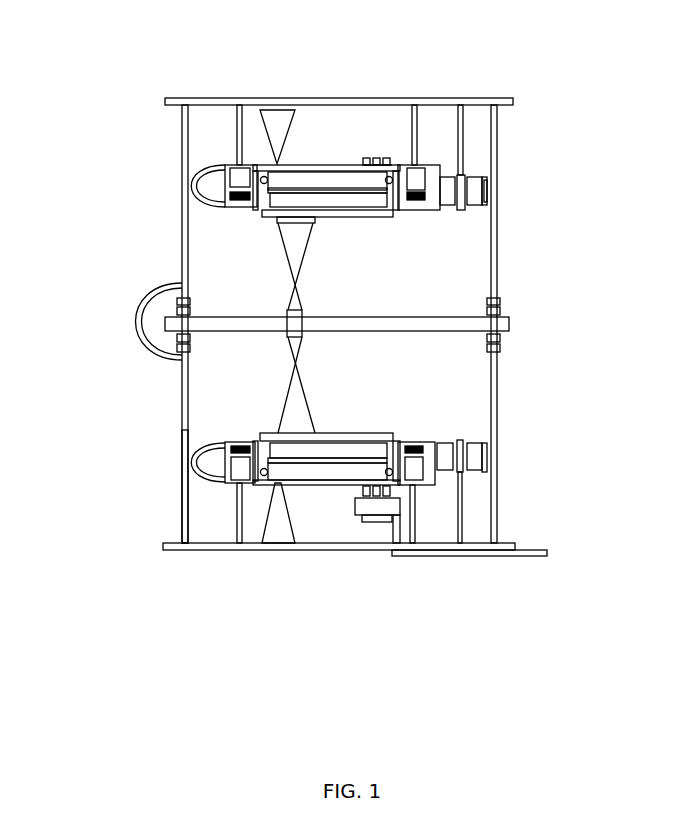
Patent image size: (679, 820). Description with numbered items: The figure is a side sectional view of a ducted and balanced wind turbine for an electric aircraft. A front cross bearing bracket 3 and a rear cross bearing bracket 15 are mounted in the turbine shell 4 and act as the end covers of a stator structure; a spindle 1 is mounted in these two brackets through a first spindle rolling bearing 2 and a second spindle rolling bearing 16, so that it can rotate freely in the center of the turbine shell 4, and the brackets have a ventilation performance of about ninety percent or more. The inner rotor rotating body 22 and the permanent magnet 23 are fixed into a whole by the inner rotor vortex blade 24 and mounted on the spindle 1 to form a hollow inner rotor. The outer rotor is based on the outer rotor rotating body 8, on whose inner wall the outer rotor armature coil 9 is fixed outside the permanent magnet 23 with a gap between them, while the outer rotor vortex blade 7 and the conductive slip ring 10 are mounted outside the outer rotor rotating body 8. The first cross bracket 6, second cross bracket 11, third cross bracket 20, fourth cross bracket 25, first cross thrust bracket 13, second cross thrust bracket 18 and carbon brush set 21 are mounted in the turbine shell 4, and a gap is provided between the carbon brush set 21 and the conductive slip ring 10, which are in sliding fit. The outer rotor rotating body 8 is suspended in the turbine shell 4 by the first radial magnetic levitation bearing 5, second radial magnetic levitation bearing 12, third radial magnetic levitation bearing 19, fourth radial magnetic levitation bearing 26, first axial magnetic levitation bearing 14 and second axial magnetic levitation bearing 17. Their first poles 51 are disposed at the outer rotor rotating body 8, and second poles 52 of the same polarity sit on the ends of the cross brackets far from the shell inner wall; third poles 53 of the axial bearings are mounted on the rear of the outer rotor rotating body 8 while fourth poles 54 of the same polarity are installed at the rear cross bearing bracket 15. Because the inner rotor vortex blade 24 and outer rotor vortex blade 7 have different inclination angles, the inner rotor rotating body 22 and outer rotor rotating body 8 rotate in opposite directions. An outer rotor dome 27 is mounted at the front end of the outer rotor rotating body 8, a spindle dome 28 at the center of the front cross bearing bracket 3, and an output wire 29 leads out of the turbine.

The spindle 1 is at (168, 292).
The first spindle rolling bearing 2 is at (177, 300).
The front cross bearing bracket 3 is at (183, 283).
The turbine shell 4 is at (183, 99).
The first radial magnetic levitation bearing 5 is at (229, 164).
The first cross bracket 6 is at (246, 164).
The outer rotor vortex blade 7 is at (278, 123).
The outer rotor rotating body 8 is at (306, 165).
The outer rotor armature coil 9 is at (332, 186).
The conductive slip ring 10 is at (388, 160).
The second cross bracket 11 is at (413, 167).
The second radial magnetic levitation bearing 12 is at (439, 165).
The first cross thrust bracket 13 is at (470, 180).
The first axial magnetic levitation bearing 14 is at (486, 186).
The rear cross bearing bracket 15 is at (497, 240).
The second spindle rolling bearing 16 is at (497, 362).
The second axial magnetic levitation bearing 17 is at (492, 482).
The second cross thrust bracket 18 is at (440, 452).
The third radial magnetic levitation bearing 19 is at (425, 452).
The third cross bracket 20 is at (416, 486).
The carbon brush set 21 is at (382, 505).
The inner rotor rotating body 22 is at (365, 437).
The permanent magnet 23 is at (315, 452).
The inner rotor vortex blade 24 is at (290, 417).
The fourth cross bracket 25 is at (235, 481).
The fourth radial magnetic levitation bearing 26 is at (213, 476).
The outer rotor dome 27 is at (185, 478).
The spindle dome 28 is at (146, 347).
The output wire 29 is at (538, 554).
The first pole 51 is at (232, 205).
The second pole 52 is at (240, 170).
The third pole 53 is at (450, 205).
The fourth pole 54 is at (472, 205).